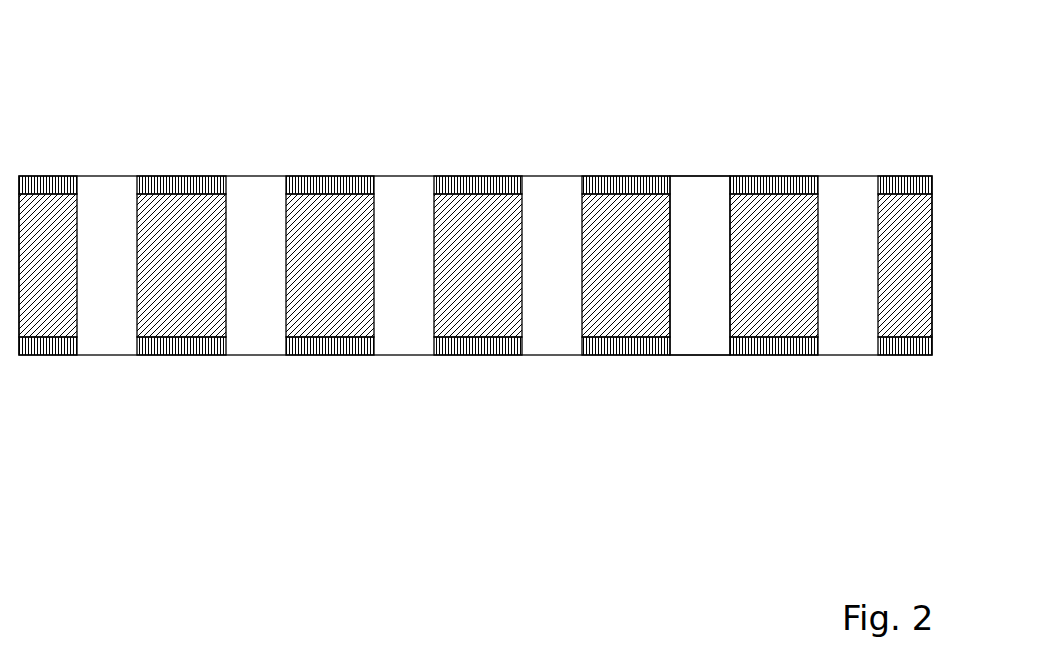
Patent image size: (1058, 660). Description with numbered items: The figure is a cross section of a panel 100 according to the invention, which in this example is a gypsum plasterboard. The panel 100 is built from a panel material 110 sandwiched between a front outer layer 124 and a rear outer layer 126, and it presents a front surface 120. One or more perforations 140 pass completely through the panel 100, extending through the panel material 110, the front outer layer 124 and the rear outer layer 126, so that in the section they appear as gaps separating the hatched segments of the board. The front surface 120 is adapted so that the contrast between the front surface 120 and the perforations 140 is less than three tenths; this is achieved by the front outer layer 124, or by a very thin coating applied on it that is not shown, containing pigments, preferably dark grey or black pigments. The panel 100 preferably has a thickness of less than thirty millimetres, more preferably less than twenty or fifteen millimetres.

The panel 100 is at (475, 269).
The panel material 110 is at (480, 246).
The front surface 120 is at (482, 367).
The front outer layer 124 is at (164, 356).
The rear outer layer 126 is at (169, 174).
The perforations 140 is at (708, 258).